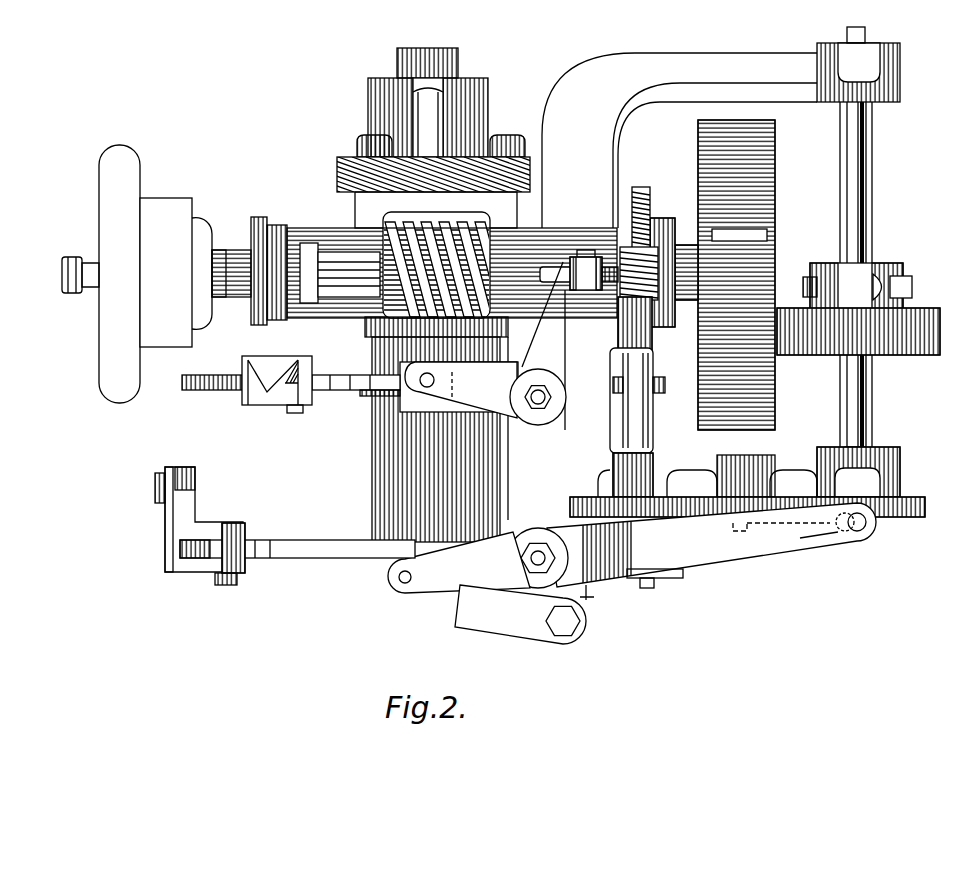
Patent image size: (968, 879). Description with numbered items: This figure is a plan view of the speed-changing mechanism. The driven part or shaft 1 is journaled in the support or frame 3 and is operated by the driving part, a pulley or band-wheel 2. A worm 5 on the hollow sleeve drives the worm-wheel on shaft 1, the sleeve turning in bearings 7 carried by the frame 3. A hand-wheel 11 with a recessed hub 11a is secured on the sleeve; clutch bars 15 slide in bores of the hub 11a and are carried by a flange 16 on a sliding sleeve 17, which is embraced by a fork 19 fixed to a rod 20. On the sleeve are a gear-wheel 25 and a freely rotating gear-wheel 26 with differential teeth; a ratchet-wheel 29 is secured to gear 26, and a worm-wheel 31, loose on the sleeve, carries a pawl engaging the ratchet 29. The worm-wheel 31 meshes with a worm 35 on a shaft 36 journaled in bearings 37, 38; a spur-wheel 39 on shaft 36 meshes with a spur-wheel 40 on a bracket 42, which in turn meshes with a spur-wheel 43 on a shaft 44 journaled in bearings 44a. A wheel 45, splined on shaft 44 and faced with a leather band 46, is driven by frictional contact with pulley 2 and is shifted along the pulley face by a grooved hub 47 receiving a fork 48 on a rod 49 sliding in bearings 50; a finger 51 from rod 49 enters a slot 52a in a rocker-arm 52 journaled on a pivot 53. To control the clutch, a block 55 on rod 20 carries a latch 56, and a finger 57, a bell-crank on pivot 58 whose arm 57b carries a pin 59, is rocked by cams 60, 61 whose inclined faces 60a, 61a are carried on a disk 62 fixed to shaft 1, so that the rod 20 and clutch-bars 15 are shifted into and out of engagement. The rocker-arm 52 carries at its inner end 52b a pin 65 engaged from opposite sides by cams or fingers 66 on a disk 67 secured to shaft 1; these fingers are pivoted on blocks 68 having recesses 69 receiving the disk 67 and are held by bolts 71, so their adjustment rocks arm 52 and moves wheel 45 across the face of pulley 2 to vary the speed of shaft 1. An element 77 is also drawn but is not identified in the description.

The driven part 1 is at (443, 59).
The driving part 2 is at (745, 275).
The support or frame 3 is at (430, 153).
The worm 5 is at (388, 222).
The bearings 7 is at (309, 232).
The hand-wheel 11 is at (101, 274).
The recessed hub 11a is at (176, 272).
The clutch bars 15 is at (222, 272).
The flange 16 is at (258, 217).
The sleeve 17 is at (236, 252).
The fork 19 is at (289, 250).
The rod 20 is at (333, 262).
The gear-wheel 25 is at (700, 251).
The gear-wheel 26 is at (686, 260).
The ratchet-wheel 29 is at (661, 220).
The worm-wheel 31 is at (638, 187).
The worm 35 is at (624, 250).
The shaft 36 is at (660, 418).
The bearing 37 is at (618, 331).
The bearing 38 is at (612, 463).
The spur-wheel 39 is at (675, 493).
The spur-wheel 40 is at (742, 526).
The bracket 42 is at (790, 462).
The spur-wheel 43 is at (918, 497).
The shaft 44 is at (868, 430).
The bearings 44a is at (888, 447).
The wheel 45 is at (912, 288).
The band 46 is at (905, 355).
The grooved hub 47 is at (886, 270).
The fork 48 is at (808, 277).
The rod 49 is at (846, 164).
The bearings 50 is at (848, 97).
The finger 51 is at (858, 532).
The rocker-arm 52 is at (711, 546).
The slot 52a is at (838, 535).
The inner end 52b is at (459, 562).
The pivot 53 is at (538, 551).
The block 55 is at (577, 253).
The latch 56 is at (544, 314).
The finger 57 is at (551, 360).
The arm 57b is at (461, 390).
The pivot 58 is at (538, 406).
The pin 59 is at (434, 380).
The cam 60 is at (400, 412).
The inclined face 60a is at (455, 396).
The cam 61 is at (275, 361).
The inclined face 61a is at (290, 395).
The disk 62 is at (342, 380).
The stud or pin 65 is at (404, 583).
The cams or fingers 66 is at (157, 534).
The disk 67 is at (297, 537).
The blocks 68 is at (192, 523).
The recesses 69 is at (227, 533).
The bolts or screws 71 is at (145, 487).
The bolt 77 is at (233, 593).